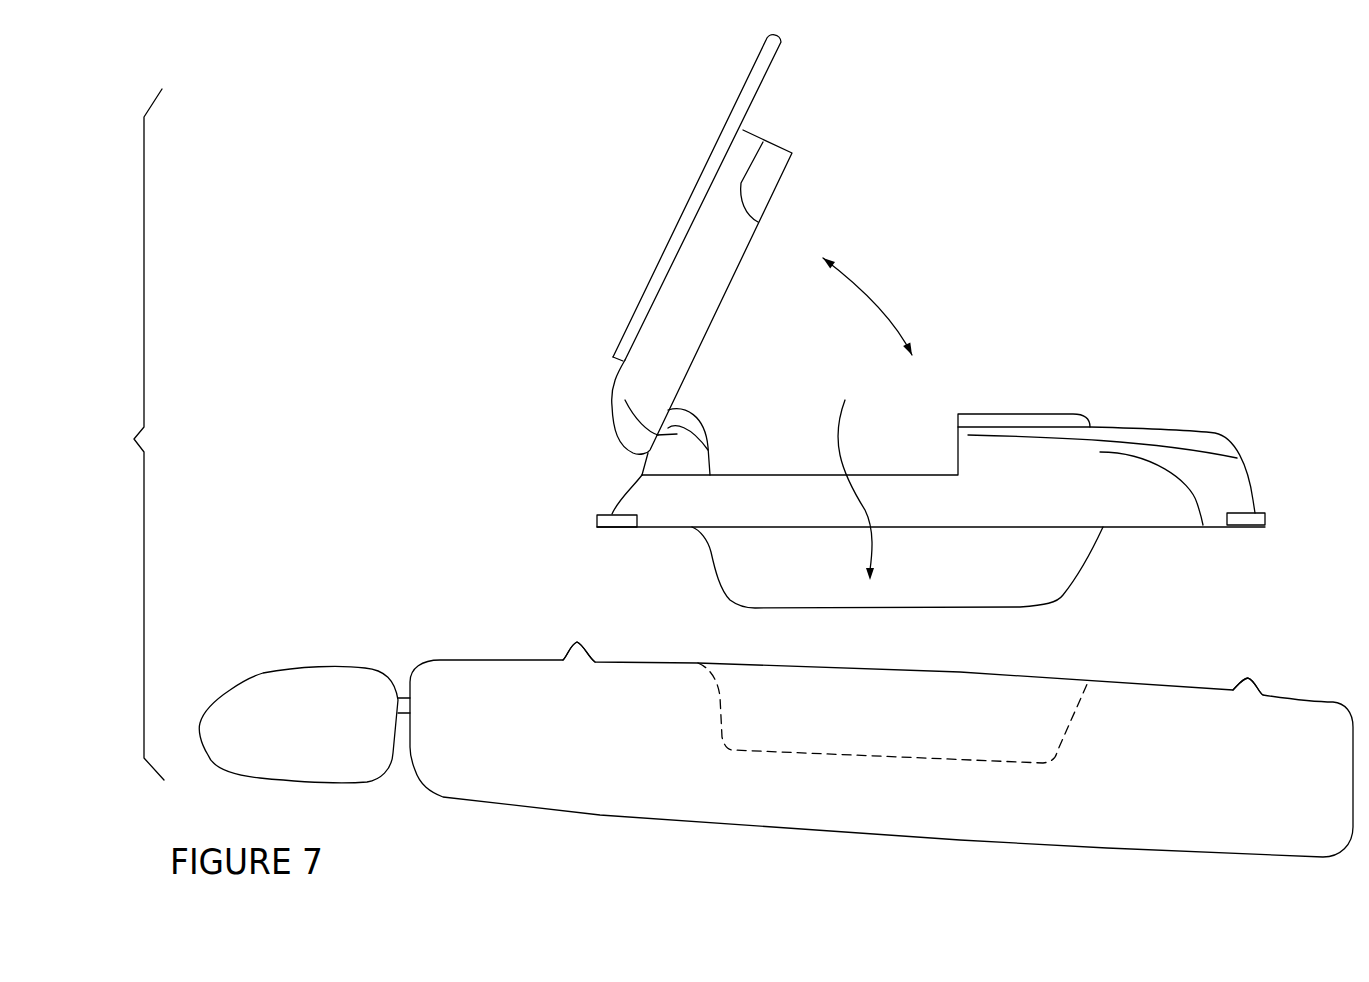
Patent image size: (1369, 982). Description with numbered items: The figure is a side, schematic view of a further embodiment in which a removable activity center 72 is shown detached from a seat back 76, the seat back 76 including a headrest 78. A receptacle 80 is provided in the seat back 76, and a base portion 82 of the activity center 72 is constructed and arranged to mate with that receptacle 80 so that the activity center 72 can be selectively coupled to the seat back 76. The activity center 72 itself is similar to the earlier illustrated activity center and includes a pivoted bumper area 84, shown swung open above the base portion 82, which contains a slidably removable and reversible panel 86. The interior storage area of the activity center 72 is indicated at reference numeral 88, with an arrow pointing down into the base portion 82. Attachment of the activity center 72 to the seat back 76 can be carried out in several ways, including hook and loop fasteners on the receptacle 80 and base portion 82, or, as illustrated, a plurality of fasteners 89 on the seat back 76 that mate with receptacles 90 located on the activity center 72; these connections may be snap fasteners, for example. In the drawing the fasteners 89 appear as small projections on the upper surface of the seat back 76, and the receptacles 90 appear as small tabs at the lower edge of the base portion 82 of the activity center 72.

The removable activity center 72 is at (658, 185).
The seat back 76 is at (470, 660).
The headrest 78 is at (268, 672).
The receptacle 80 is at (1075, 712).
The base portion 82 is at (1090, 558).
The pivoted bumper area 84 is at (707, 260).
The slidably removable and reversible panel 86 is at (747, 82).
The interior storage area 88 is at (854, 475).
The fasteners 89 is at (585, 641).
The receptacles 90 is at (597, 527).